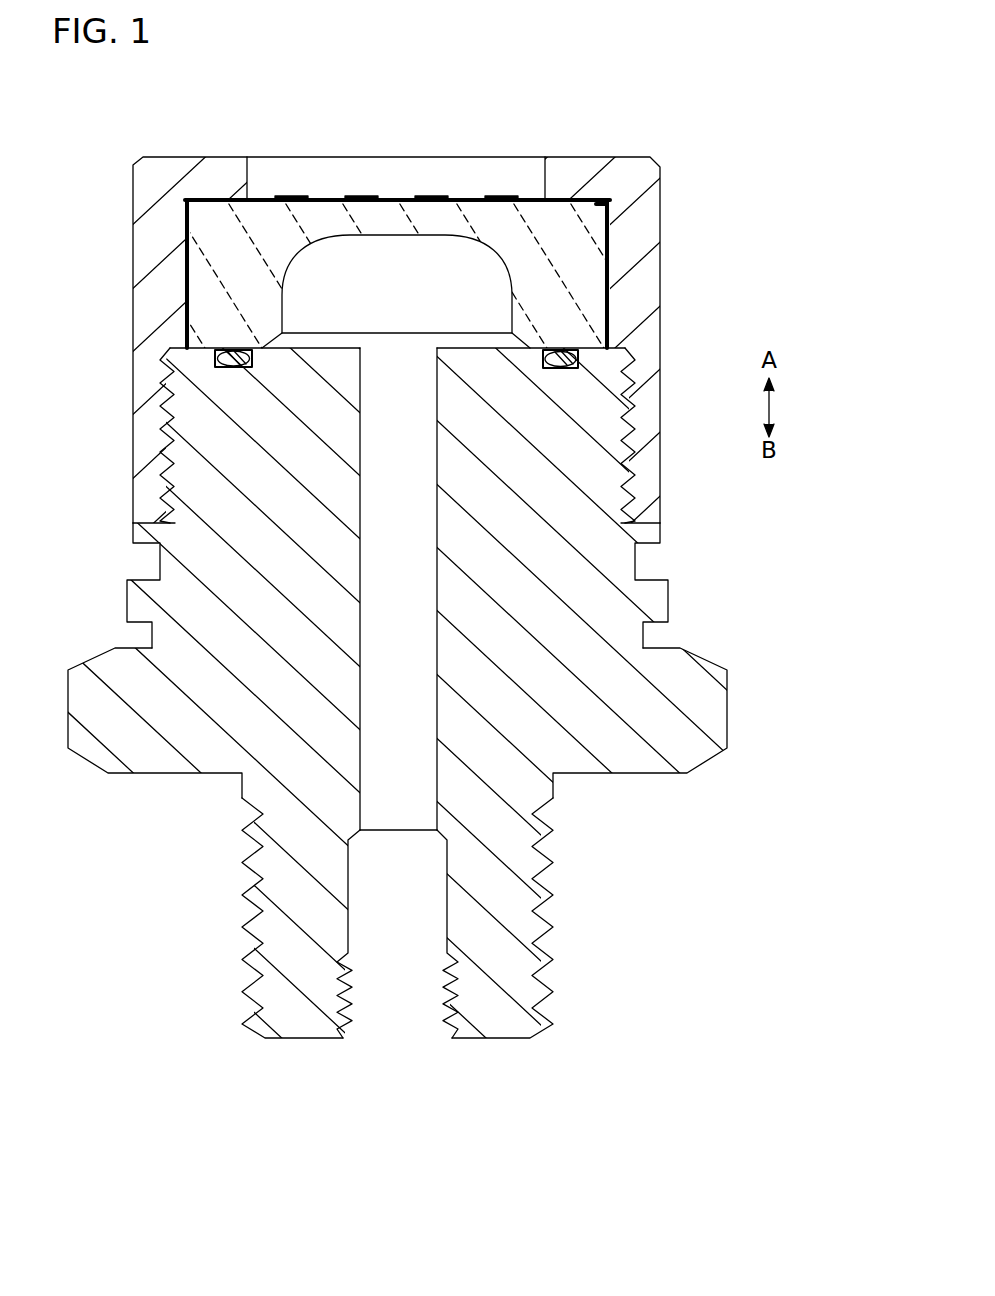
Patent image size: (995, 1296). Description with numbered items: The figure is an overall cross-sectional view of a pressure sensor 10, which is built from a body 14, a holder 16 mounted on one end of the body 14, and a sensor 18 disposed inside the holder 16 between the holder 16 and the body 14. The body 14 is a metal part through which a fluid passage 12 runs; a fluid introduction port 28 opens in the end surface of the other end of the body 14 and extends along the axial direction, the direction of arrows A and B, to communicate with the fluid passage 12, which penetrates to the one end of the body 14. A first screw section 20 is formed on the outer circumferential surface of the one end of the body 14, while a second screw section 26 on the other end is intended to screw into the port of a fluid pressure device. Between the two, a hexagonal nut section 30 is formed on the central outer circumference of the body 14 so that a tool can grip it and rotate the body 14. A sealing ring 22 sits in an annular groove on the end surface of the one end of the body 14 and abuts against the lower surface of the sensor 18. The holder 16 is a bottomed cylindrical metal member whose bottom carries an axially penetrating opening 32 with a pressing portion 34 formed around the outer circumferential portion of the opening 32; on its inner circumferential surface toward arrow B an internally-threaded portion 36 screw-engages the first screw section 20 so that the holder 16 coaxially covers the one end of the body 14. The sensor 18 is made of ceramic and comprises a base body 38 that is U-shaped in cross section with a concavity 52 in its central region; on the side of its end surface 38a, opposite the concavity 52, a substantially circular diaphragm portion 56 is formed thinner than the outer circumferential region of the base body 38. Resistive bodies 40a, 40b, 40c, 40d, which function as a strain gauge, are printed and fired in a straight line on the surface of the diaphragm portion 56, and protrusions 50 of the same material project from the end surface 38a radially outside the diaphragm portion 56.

The pressure sensor 10 is at (335, 78).
The fluid passage 12 is at (398, 506).
The body 14 is at (216, 828).
The holder 16 is at (130, 302).
The sensor 18 is at (575, 255).
The first screw section 20 is at (168, 466).
The sealing ring 22 is at (557, 349).
The second screw section 26 is at (545, 891).
The fluid introduction port 28 is at (400, 1020).
The nut section 30 is at (706, 706).
The opening 32 is at (399, 175).
The pressing portion 34 is at (229, 172).
The internally-threaded portion 36 is at (170, 417).
The base body 38 is at (212, 241).
The end surface 38a is at (598, 197).
The resistive body 40a is at (291, 196).
The resistive body 40b is at (360, 196).
The resistive body 40c is at (432, 196).
The resistive body 40d is at (501, 196).
The protrusions 50 is at (210, 196).
The concavity 52 is at (410, 326).
The diaphragm portion 56 is at (391, 229).